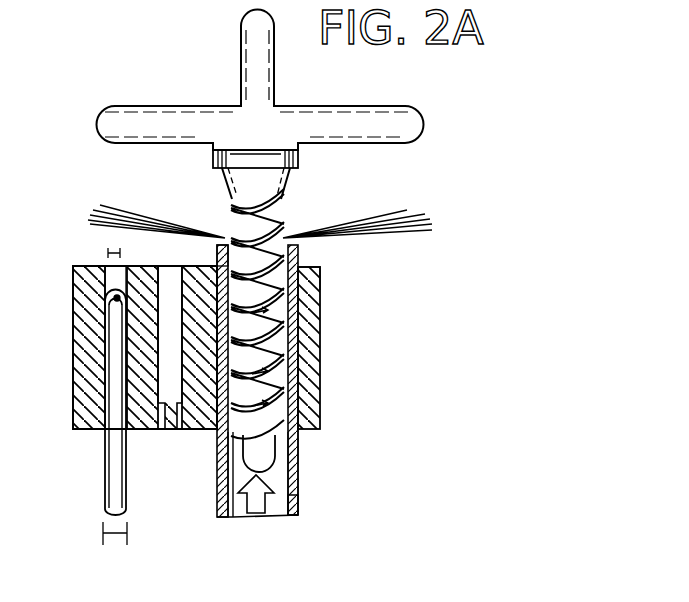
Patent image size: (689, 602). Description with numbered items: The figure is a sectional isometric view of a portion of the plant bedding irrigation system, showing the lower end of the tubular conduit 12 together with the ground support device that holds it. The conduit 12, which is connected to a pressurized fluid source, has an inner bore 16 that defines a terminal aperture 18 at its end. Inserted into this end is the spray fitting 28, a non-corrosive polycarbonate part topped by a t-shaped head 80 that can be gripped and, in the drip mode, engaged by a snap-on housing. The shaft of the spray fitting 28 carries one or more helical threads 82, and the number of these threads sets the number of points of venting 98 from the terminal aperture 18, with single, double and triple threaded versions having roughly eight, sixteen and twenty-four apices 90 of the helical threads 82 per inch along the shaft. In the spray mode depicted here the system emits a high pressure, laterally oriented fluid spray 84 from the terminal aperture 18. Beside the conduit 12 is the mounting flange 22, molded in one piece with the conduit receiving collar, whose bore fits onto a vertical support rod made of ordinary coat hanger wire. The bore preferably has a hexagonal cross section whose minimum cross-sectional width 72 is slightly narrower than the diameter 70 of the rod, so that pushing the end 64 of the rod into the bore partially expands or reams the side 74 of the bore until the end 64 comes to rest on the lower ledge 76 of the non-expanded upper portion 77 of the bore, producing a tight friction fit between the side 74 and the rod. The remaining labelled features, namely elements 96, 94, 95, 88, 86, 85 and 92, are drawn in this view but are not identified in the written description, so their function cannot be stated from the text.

The t-shaped head 80 is at (402, 123).
The spray fitting 28 is at (290, 186).
The terminal aperture 18 is at (223, 233).
The fluid spray 84 is at (418, 213).
The points of venting 98 is at (290, 235).
The helical threads 82 is at (320, 318).
The tube upper wall end 96 is at (217, 256).
The side of the bore 74 is at (84, 362).
The mounting flange 22 is at (146, 432).
The lower ledge 76 is at (97, 299).
The upper portion of the bore 77 is at (98, 287).
The end of the vertical support rod 64 is at (120, 295).
The minimum cross-sectional width 72 is at (118, 250).
The diameter of the vertical support rod 70 is at (113, 533).
The right housing block 94 is at (318, 380).
The right block top 95 is at (320, 270).
The screw lower end 88 is at (300, 435).
The apices of helical threads 90 is at (222, 438).
The tube lower wall 86 is at (222, 480).
The flow direction arrow 85 is at (262, 515).
The tube right lower wall 92 is at (300, 457).
The inner bore 16 is at (277, 472).
The tubular conduit 12 is at (300, 505).